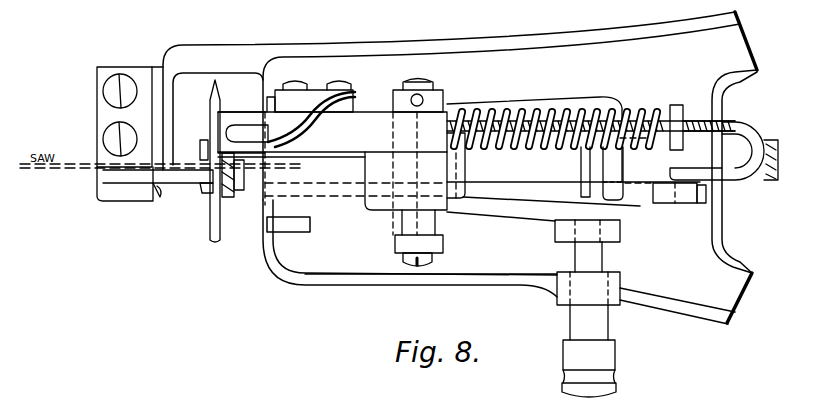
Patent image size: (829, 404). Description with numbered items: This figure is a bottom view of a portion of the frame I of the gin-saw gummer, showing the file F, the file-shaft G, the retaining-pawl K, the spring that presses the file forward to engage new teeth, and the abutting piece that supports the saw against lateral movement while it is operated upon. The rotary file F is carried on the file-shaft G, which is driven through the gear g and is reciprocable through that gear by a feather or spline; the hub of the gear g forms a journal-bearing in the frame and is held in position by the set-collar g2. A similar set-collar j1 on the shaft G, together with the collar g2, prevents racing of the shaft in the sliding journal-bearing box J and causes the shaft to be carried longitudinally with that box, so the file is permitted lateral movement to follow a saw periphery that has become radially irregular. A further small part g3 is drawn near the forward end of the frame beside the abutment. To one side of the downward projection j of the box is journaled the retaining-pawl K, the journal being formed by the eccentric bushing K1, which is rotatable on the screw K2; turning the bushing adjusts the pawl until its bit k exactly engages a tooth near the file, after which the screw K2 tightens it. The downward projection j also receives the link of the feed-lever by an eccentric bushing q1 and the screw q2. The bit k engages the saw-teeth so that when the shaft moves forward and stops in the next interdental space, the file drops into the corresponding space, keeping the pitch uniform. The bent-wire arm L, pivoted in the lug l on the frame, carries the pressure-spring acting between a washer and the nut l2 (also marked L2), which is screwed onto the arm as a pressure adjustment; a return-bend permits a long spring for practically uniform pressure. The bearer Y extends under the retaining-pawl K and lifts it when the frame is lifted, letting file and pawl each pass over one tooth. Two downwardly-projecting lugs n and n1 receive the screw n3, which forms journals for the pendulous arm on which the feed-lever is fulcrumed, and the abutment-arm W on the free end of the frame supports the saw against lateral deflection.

The abutment-arm W is at (178, 185).
The file F is at (212, 218).
The bit k is at (230, 200).
The pin extension g3 is at (240, 193).
The bearer Y is at (243, 158).
The sliding journal-bearing box J is at (332, 173).
The retaining-pawl K is at (380, 108).
The eccentric bushing K1 is at (440, 97).
The screw K2 is at (430, 82).
The downward projection j is at (393, 207).
The set-collar j1 is at (460, 195).
The eccentric bushing q1 is at (404, 247).
The screw q2 is at (417, 267).
The file-shaft G is at (591, 139).
The nut L2 is at (627, 110).
The nut l2 is at (677, 115).
The arm L is at (743, 123).
The gear g is at (700, 197).
The lug l is at (705, 203).
The set-collar g2 is at (612, 170).
The frame I is at (431, 251).
The downwardly-projecting lug n1 is at (557, 230).
The downwardly-projecting lug n is at (588, 306).
The screw n3 is at (589, 368).